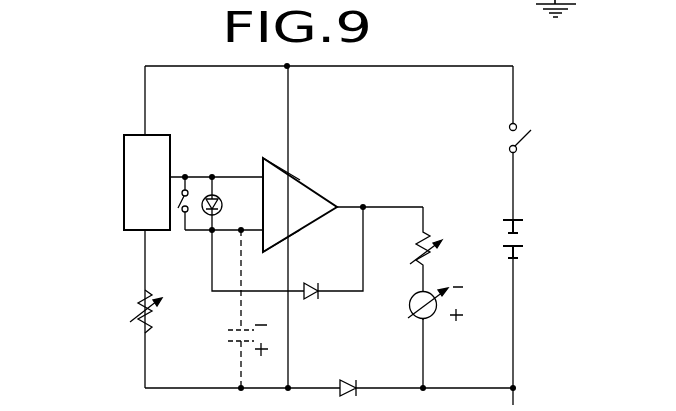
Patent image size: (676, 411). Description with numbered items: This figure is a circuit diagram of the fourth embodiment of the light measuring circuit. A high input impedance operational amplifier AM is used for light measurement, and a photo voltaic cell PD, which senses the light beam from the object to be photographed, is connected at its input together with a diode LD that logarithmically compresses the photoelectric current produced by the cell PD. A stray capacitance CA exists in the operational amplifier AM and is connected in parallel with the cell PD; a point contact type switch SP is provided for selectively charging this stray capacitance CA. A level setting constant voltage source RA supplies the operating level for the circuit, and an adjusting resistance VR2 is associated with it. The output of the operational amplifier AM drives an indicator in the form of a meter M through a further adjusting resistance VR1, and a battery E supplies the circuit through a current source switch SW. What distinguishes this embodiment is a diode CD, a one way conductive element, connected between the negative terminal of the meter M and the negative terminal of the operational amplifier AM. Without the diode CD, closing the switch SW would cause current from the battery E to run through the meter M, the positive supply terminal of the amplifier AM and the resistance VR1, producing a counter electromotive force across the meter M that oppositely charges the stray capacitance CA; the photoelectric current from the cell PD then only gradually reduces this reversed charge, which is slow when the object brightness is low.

The level setting constant voltage source RA is at (147, 182).
The switch SP is at (175, 221).
The photo voltaic cell PD is at (222, 203).
The operational amplifier AM is at (308, 198).
The current source switch SW is at (508, 141).
The battery E is at (521, 239).
The adjusting resistance VR1 is at (442, 249).
The adjusting resistance VR2 is at (159, 316).
The stray capacitance CA is at (237, 309).
The diode LD is at (287, 270).
The diode CD is at (347, 373).
The meter M is at (430, 320).